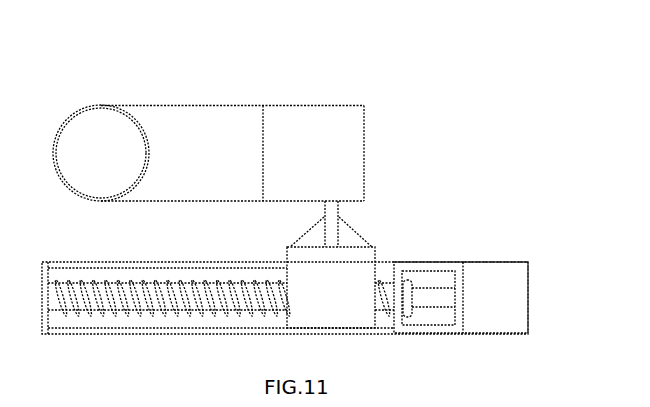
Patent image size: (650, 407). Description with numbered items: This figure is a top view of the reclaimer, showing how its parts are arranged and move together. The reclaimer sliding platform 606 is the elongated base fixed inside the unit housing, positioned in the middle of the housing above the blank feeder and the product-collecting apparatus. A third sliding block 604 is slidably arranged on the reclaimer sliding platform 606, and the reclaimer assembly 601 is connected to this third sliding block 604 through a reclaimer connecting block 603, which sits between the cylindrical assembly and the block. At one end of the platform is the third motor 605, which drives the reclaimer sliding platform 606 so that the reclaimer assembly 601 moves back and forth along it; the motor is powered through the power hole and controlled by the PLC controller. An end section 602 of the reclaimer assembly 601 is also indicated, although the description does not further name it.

The reclaimer assembly 601 is at (196, 107).
The cylinder end section 602 is at (379, 106).
The reclaimer connecting block 603 is at (392, 182).
The third sliding block 604 is at (391, 252).
The third motor 605 is at (498, 271).
The reclaimer sliding platform 606 is at (278, 200).